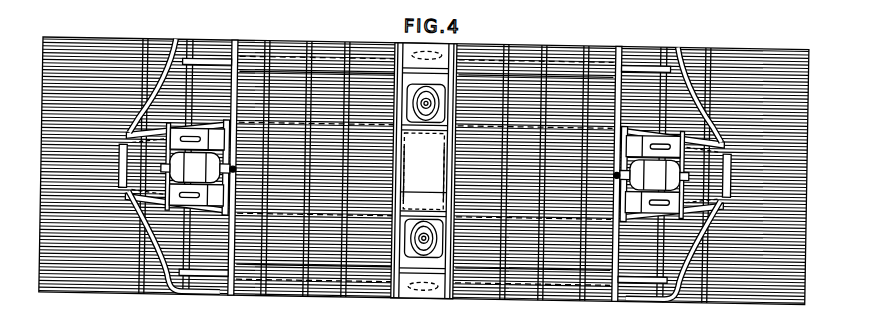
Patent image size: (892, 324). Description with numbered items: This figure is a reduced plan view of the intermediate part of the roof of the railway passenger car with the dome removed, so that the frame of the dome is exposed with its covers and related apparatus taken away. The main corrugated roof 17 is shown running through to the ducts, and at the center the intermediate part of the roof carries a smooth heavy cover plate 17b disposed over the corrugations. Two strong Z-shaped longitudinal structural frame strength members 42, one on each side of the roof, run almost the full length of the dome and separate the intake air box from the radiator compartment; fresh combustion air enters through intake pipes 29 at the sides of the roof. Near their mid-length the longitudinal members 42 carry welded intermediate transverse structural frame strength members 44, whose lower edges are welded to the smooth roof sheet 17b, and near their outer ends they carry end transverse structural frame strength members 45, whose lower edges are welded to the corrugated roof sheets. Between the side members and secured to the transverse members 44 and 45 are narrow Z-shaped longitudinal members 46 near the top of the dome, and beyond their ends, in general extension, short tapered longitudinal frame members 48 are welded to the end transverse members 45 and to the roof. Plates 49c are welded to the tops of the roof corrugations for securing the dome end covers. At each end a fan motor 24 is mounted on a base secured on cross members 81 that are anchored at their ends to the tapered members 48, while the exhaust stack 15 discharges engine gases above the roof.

The corrugated roof 17 is at (86, 46).
The smooth heavy cover plate 17b is at (415, 177).
The exhaust stack 15 is at (427, 101).
The motor 24 is at (425, 171).
The intake pipes 29 is at (406, 46).
The Z-shaped longitudinal structural frame strength members 42 is at (295, 52).
The intermediate transverse structural frame strength member 44 is at (398, 154).
The end transverse structural frame strength members 45 is at (237, 62).
The narrow Z-shaped longitudinal structural frame strength members 46 is at (406, 194).
The short tapered longitudinal frame members 48 is at (213, 212).
The plates 49c is at (166, 258).
The cross members 81 is at (168, 164).